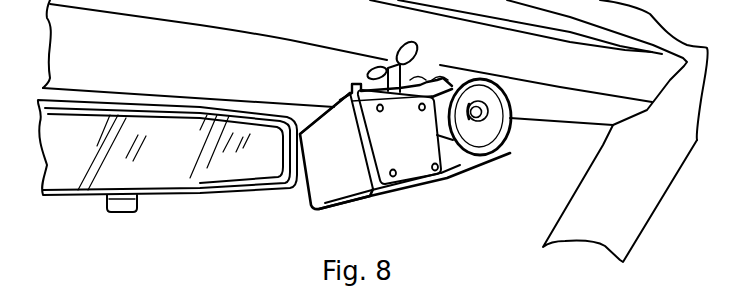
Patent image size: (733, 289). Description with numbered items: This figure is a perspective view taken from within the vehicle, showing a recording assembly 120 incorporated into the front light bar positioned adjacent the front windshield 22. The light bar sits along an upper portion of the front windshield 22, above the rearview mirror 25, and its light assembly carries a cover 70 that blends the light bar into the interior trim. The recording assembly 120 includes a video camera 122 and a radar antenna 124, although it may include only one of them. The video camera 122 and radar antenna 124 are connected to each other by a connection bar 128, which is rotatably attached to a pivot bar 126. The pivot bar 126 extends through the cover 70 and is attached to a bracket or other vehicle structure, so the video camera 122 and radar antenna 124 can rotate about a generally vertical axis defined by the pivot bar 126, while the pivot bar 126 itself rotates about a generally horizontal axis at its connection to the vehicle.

The front windshield 22 is at (287, 234).
The rearview mirror 25 is at (203, 195).
The cover 70 is at (577, 112).
The recording assembly 120 is at (398, 135).
The video camera 122 is at (337, 143).
The radar antenna 124 is at (495, 142).
The pivot bar 126 is at (390, 67).
The connection bar 128 is at (425, 78).